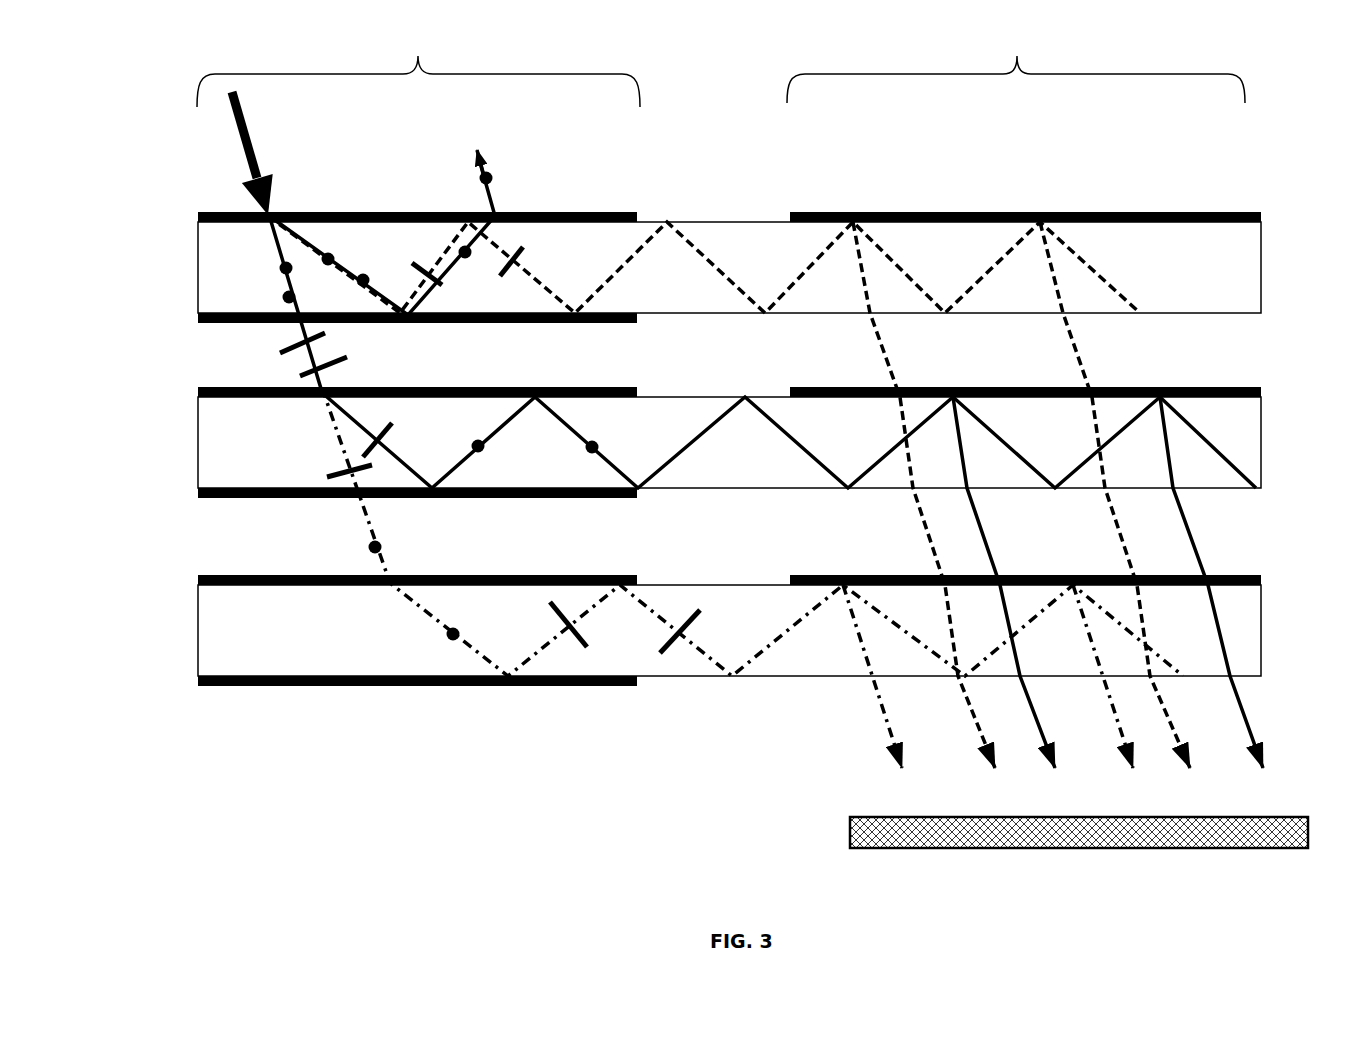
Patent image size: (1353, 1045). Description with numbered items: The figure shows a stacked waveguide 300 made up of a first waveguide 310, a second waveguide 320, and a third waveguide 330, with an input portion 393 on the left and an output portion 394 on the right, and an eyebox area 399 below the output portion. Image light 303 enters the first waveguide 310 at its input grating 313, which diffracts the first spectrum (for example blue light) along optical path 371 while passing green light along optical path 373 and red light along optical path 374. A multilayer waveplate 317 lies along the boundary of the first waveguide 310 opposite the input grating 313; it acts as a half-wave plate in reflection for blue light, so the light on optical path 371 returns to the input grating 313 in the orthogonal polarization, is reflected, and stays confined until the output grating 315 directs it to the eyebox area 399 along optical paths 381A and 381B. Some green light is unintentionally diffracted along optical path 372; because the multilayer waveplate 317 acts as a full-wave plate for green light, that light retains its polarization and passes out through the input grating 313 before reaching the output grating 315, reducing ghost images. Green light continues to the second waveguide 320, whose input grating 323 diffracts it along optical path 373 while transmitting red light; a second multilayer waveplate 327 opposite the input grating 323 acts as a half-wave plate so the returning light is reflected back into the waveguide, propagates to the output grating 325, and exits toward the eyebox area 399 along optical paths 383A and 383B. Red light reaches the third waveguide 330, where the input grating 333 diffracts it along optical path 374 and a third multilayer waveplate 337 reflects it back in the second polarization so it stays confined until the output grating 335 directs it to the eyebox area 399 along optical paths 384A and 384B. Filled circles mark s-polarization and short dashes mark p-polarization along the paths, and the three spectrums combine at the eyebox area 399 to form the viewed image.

The stacked waveguide 300 is at (1203, 173).
The image light 303 is at (250, 166).
The first waveguide 310 is at (196, 286).
The input grating 313 is at (575, 212).
The output grating 315 is at (907, 212).
The multilayer waveplate 317 is at (473, 325).
The second waveguide 320 is at (196, 431).
The input grating 323 is at (588, 388).
The output grating 325 is at (973, 387).
The second multilayer waveplate 327 is at (474, 499).
The third waveguide 330 is at (197, 619).
The input grating 333 is at (588, 575).
The output grating 335 is at (1033, 575).
The third multilayer waveplate 337 is at (537, 687).
The optical path 371 is at (450, 246).
The optical path 372 is at (497, 200).
The optical path 373 is at (293, 336).
The optical path 374 is at (323, 374).
The optical path 381A is at (978, 725).
The optical path 381B is at (1183, 760).
The optical path 383A is at (1053, 758).
The optical path 383B is at (1253, 762).
The optical path 384A is at (885, 730).
The optical path 384B is at (1108, 705).
The input portion 393 is at (418, 68).
The output portion 394 is at (1016, 66).
The eyebox area 399 is at (850, 829).